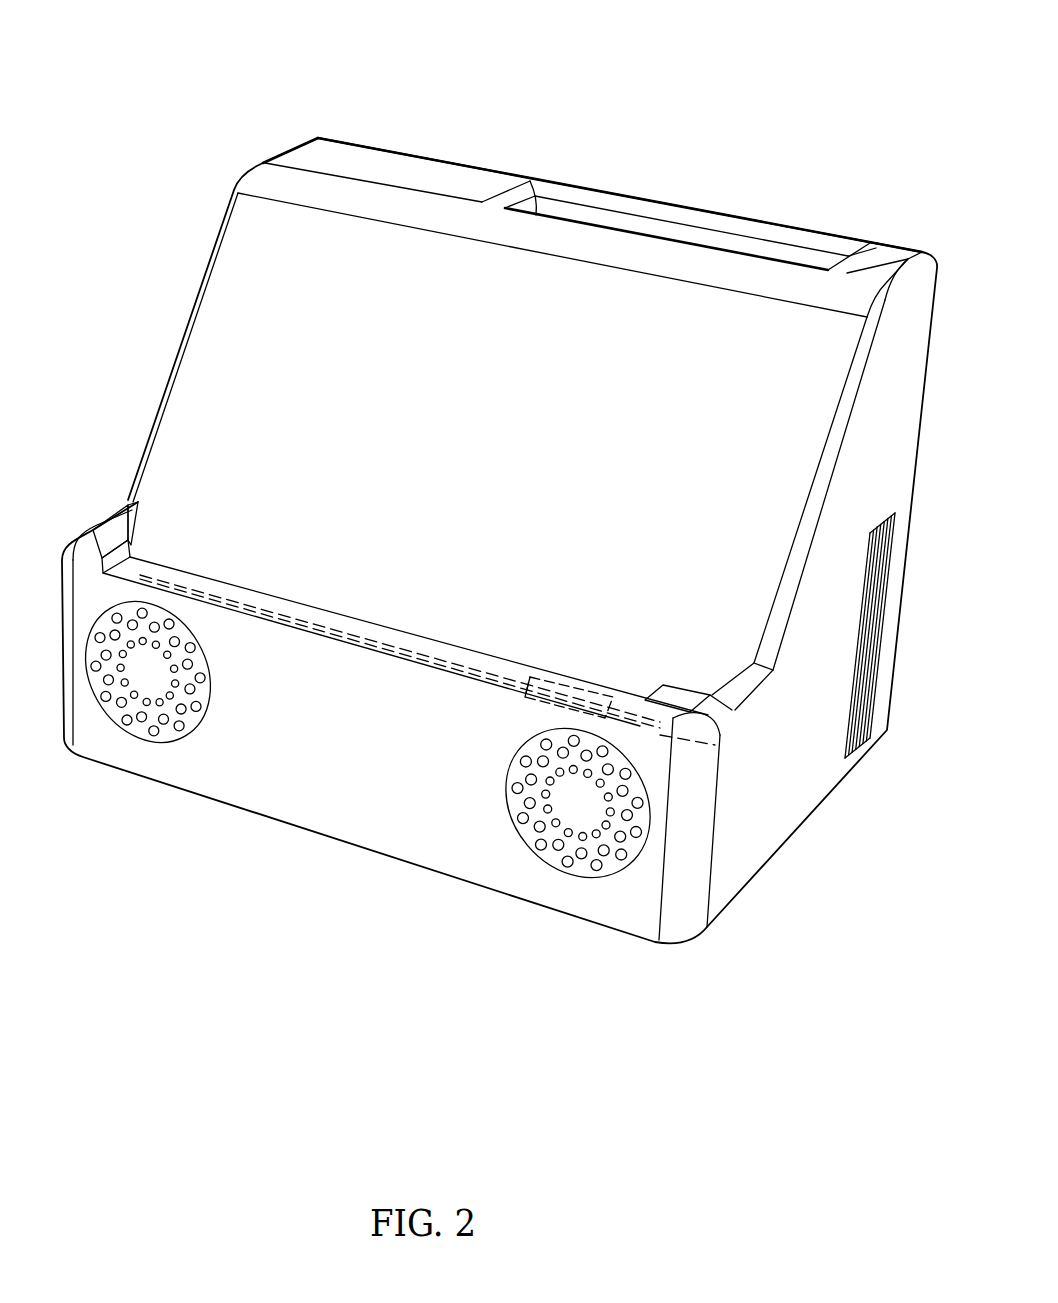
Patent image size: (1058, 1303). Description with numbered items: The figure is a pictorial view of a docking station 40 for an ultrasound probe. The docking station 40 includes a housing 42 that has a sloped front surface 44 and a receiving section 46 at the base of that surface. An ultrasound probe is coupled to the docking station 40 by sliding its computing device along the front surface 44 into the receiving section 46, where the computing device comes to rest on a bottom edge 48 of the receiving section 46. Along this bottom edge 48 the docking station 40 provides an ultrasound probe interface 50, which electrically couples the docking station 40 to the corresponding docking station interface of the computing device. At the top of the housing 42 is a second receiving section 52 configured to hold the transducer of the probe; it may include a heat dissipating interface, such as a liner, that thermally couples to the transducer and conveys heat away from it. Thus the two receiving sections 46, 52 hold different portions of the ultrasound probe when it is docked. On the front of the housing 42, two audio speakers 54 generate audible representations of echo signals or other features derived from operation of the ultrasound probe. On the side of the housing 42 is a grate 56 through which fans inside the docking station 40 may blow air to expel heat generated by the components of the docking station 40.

The docking station 40 is at (180, 93).
The housing 42 is at (413, 171).
The front surface 44 is at (215, 338).
The receiving section 46 is at (236, 562).
The bottom edge 48 is at (316, 652).
The ultrasound probe interface 50 is at (543, 672).
The second receiving section 52 is at (750, 236).
The audio speakers 54 is at (134, 728).
The grate 56 is at (852, 730).